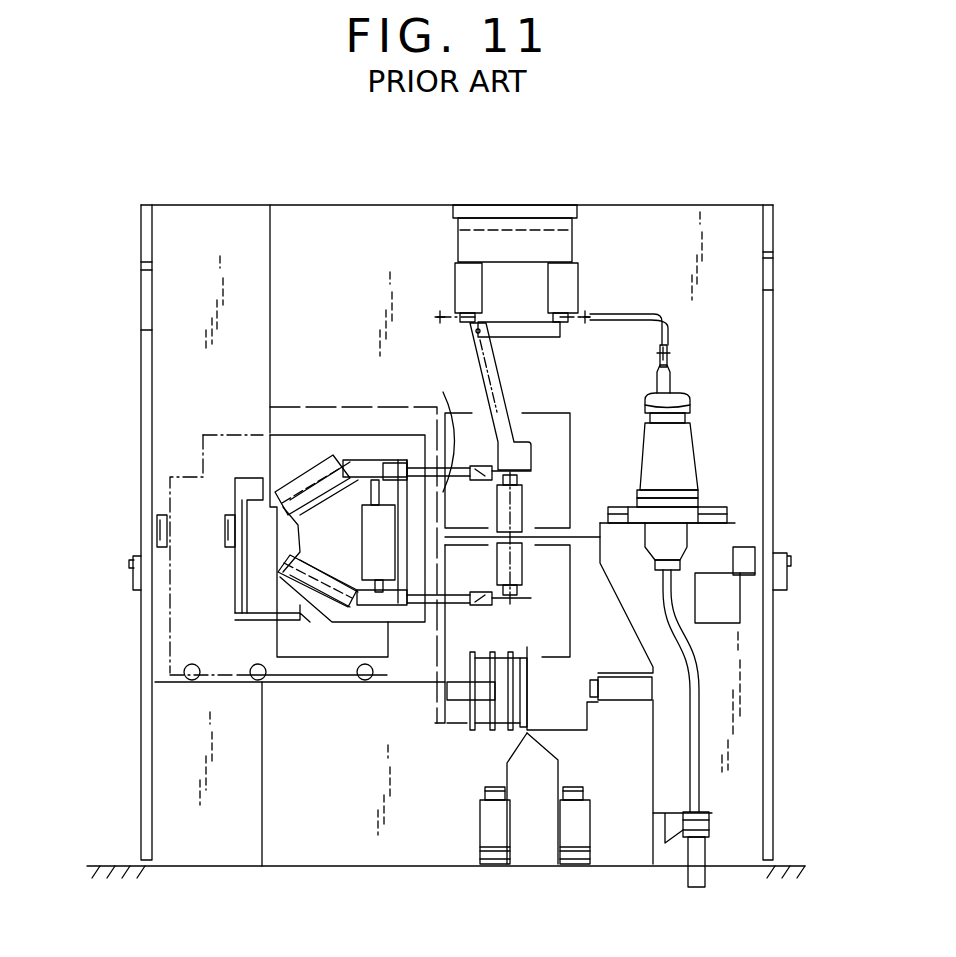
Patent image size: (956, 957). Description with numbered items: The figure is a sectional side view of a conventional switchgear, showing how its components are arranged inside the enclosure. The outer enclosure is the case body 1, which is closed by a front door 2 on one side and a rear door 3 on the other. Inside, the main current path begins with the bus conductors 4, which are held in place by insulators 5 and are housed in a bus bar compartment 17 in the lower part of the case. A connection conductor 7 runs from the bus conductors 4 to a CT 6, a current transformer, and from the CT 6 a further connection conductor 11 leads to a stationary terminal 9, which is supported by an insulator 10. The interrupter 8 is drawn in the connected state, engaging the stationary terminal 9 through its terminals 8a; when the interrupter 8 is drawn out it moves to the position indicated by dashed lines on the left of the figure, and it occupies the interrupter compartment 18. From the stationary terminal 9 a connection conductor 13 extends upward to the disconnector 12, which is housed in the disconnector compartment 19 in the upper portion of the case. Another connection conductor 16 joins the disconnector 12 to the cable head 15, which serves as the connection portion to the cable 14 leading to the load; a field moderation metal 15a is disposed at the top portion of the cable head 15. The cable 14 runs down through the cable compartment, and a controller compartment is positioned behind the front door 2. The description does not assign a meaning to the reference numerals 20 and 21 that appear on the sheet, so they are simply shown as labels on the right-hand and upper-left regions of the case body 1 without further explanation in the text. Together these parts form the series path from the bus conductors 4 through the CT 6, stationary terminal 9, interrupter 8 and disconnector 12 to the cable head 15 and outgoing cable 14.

The case body 1 is at (662, 205).
The front door 2 is at (141, 330).
The rear door 3 is at (773, 290).
The bus conductors 4 is at (593, 697).
The insulators 5 is at (480, 827).
The CT (current transformer) 6 is at (467, 725).
The connection conductor 7 is at (558, 724).
The interrupter 8 is at (260, 463).
The terminals 8a is at (462, 412).
The stationary terminal 9 is at (526, 474).
The insulator 10 is at (525, 500).
The connection conductor 11 is at (533, 622).
The disconnector 12 is at (520, 322).
The connection conductor 13 is at (520, 425).
The cable 14 is at (705, 690).
The cable head 15 is at (700, 450).
The field moderation metal 15a is at (690, 403).
The connection conductor 16 is at (667, 340).
The bus bar compartment 17 is at (335, 835).
The interrupter compartment 18 is at (300, 422).
The disconnector compartment 19 is at (407, 207).
The right lower panel 20 is at (748, 735).
The upper left panel 21 is at (215, 242).